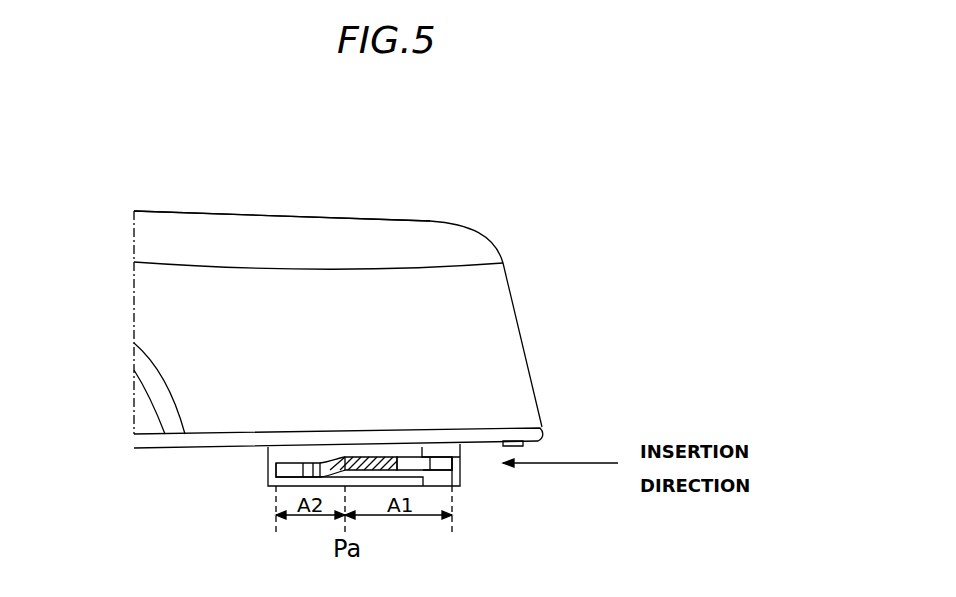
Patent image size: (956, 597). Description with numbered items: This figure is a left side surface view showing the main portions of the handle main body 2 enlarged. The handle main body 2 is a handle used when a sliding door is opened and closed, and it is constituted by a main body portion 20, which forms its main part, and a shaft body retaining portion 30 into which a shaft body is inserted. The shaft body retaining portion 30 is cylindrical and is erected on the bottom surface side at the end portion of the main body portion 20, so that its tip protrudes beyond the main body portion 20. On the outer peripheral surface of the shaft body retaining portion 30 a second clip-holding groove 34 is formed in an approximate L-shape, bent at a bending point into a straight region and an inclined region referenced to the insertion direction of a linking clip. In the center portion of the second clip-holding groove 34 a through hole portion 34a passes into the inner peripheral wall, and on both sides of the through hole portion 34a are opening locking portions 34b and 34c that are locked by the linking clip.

The handle main body 2 is at (498, 195).
The main body portion 20 is at (330, 211).
The shaft body retaining portion 30 is at (268, 471).
The second clip-holding groove 34 is at (367, 391).
The through hole portion 34a is at (355, 462).
The opening locking portion 34b is at (400, 462).
The opening locking portion 34c is at (320, 462).